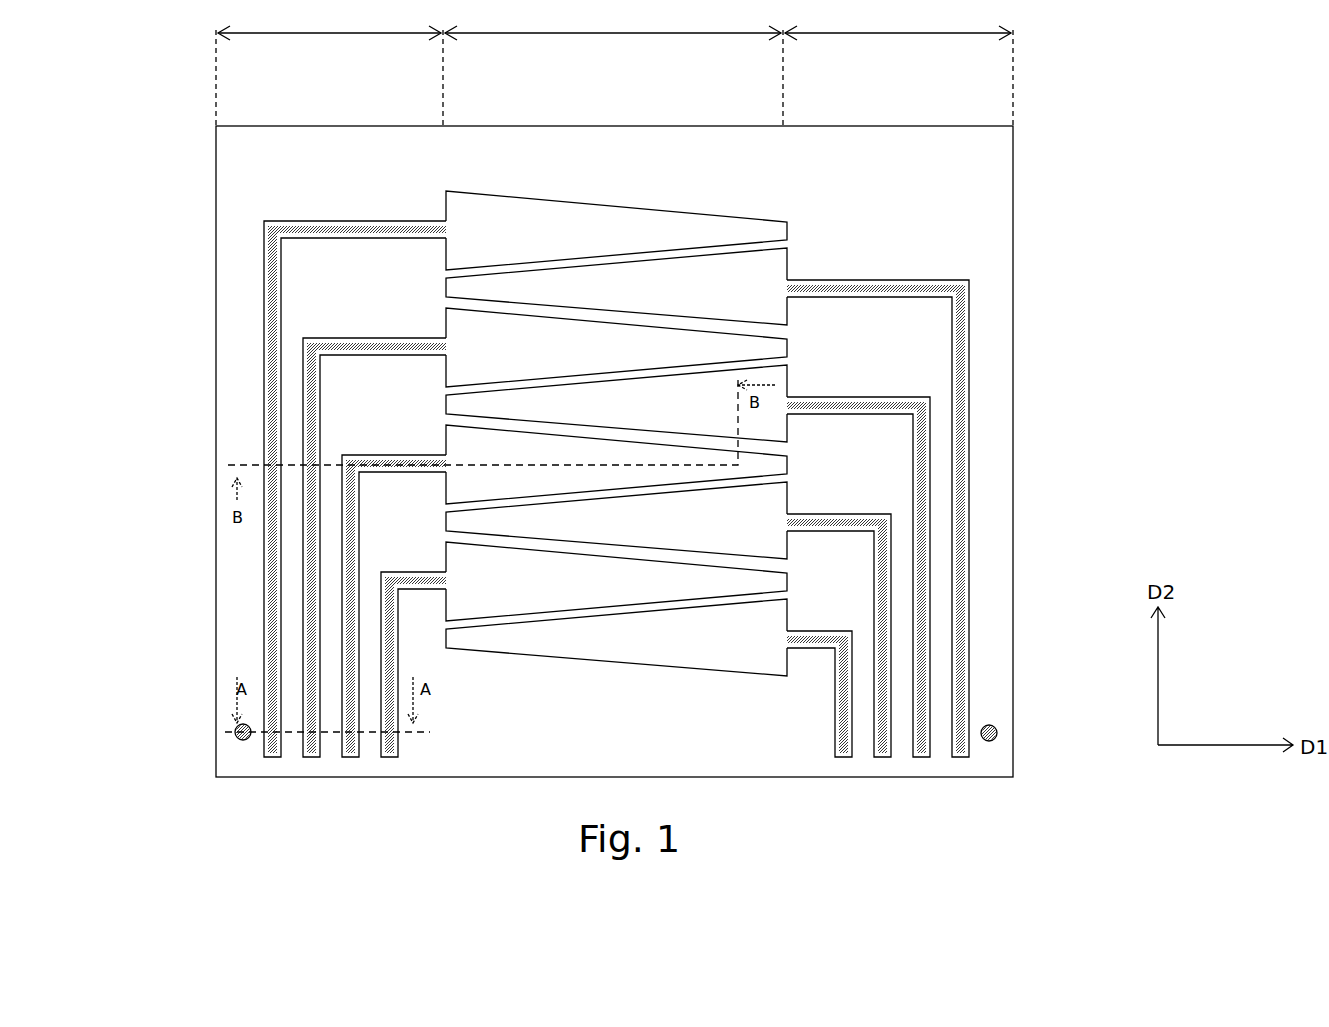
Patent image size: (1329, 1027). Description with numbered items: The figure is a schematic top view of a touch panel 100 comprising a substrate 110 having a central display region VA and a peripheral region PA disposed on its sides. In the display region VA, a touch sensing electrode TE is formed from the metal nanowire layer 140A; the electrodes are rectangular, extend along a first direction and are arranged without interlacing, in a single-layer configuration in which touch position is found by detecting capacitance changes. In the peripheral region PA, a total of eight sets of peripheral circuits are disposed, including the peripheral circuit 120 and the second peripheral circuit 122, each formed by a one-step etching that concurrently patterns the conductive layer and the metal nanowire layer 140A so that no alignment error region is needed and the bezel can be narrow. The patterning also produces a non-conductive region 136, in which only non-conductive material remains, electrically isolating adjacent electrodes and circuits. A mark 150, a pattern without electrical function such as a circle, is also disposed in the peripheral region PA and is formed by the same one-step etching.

The touch panel 100 is at (90, 109).
The substrate 110 is at (240, 167).
The peripheral circuit 120 is at (265, 268).
The second peripheral circuit 122 is at (305, 374).
The non-conductive region 136 is at (745, 246).
The metal nanowire layer 140A is at (588, 228).
The mark 150 is at (238, 742).